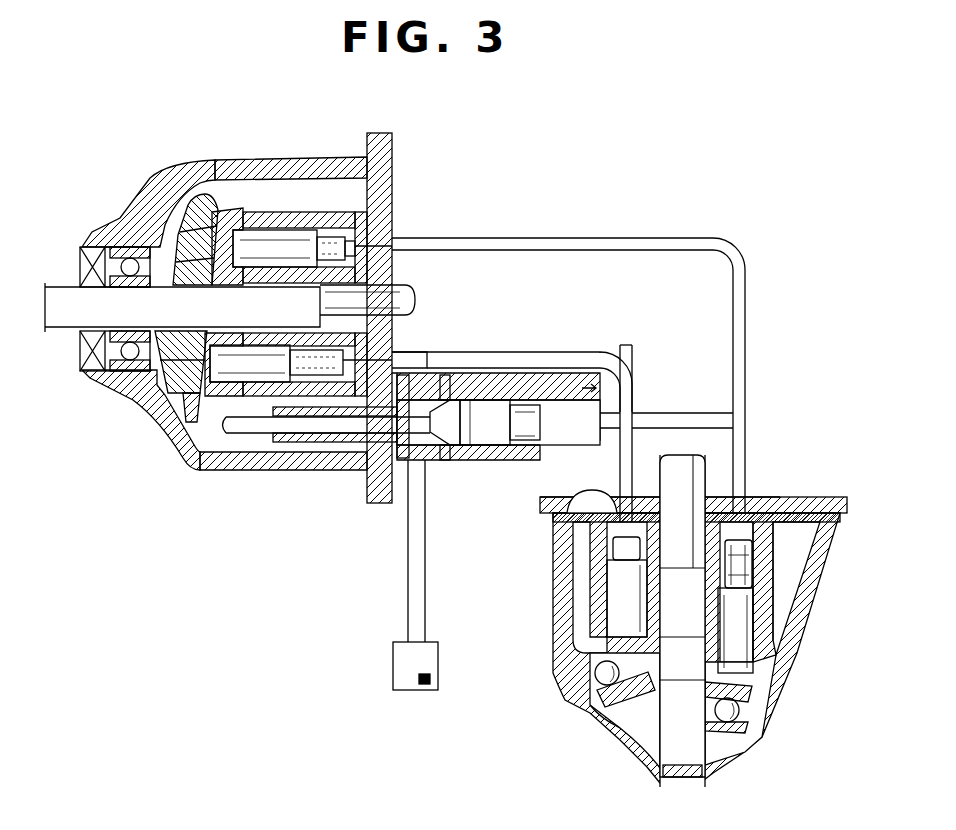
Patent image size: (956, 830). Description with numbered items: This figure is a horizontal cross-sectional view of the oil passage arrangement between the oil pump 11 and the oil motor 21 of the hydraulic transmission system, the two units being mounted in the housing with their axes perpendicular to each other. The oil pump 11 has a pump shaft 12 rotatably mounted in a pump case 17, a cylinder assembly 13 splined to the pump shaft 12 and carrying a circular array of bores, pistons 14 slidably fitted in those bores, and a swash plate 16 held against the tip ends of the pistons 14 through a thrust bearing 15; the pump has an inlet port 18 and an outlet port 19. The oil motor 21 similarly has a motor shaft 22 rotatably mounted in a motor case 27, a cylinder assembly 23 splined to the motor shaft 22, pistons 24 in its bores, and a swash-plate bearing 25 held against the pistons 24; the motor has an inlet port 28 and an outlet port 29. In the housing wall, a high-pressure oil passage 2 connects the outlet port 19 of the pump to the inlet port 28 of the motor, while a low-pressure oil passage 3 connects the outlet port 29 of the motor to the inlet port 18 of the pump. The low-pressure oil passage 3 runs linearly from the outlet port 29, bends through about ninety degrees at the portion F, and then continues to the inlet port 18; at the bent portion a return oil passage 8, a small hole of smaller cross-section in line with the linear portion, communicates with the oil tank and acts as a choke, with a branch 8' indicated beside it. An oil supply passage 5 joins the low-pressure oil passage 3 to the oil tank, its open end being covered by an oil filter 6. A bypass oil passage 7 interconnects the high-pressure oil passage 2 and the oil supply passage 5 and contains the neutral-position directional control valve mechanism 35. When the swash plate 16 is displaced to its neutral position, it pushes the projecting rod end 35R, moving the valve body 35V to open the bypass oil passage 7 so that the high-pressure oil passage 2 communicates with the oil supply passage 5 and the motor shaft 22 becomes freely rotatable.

The high-pressure oil passage 2 is at (585, 236).
The low-pressure oil passage 3 is at (521, 360).
The oil supply passage 5 is at (408, 580).
The oil filter 6 is at (393, 648).
The bypass oil passage 7 is at (672, 412).
The return oil passage 8 is at (625, 418).
The tube branch 8' is at (542, 325).
The oil pump 11 is at (285, 192).
The pump shaft 12 is at (52, 328).
The cylinder assembly 13 is at (315, 210).
The pistons 14 is at (265, 230).
The thrust bearing 15 is at (185, 206).
The swash plate 16 is at (172, 392).
The pump case 17 is at (238, 474).
The inlet port 18 is at (405, 345).
The outlet port 19 is at (398, 240).
The oil motor 21 is at (790, 560).
The motor shaft 22 is at (640, 712).
The cylinder assembly 23 is at (767, 577).
The pistons 24 is at (612, 600).
The swash-plate bearing 25 is at (760, 748).
The motor case 27 is at (562, 690).
The inlet port 28 is at (748, 510).
The outlet port 29 is at (680, 524).
The neutral-position directional control valve mechanism 35 is at (432, 470).
The projecting end of the rod 35R is at (210, 428).
The valve body 35V is at (462, 472).